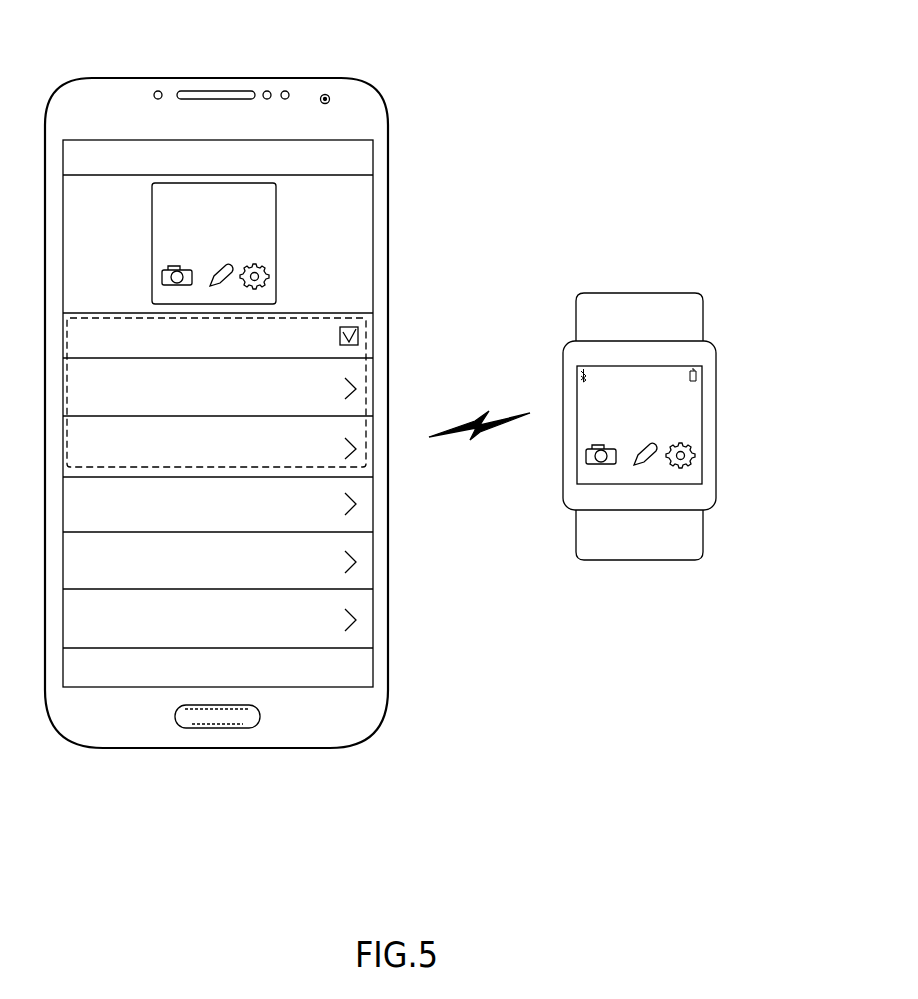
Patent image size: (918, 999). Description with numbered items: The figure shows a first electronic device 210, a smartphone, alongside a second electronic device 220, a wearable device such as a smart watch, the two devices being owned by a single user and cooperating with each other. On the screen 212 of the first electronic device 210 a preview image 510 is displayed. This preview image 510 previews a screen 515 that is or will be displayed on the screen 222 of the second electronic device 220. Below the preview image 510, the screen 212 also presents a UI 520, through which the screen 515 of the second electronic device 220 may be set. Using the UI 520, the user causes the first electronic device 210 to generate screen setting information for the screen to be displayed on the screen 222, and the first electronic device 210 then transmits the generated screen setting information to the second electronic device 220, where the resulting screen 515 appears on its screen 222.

The first electronic device 210 is at (322, 79).
The screen of the first electronic device 212 is at (259, 368).
The preview image 510 is at (277, 243).
The UI 520 is at (368, 385).
The second electronic device 220 is at (716, 348).
The screen of the second electronic device 222 is at (702, 378).
The screen 515 is at (693, 410).